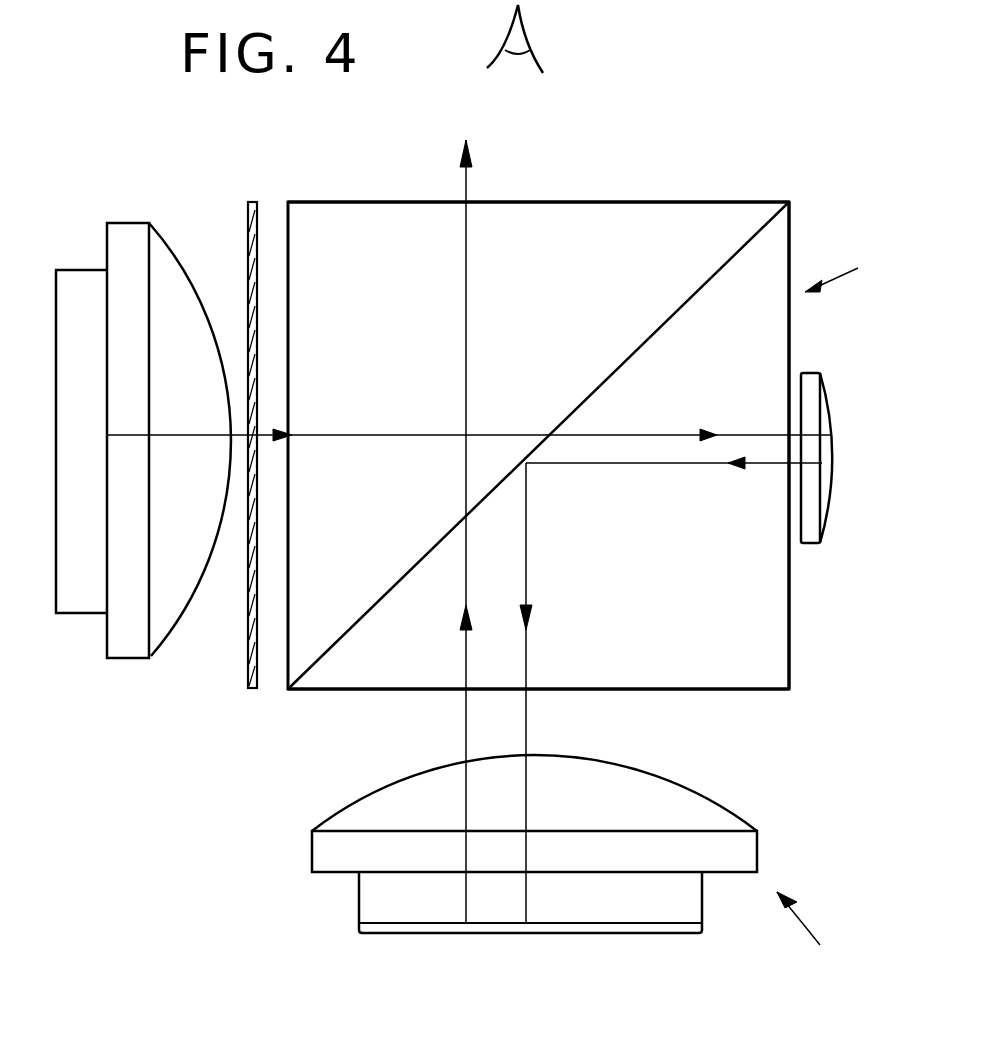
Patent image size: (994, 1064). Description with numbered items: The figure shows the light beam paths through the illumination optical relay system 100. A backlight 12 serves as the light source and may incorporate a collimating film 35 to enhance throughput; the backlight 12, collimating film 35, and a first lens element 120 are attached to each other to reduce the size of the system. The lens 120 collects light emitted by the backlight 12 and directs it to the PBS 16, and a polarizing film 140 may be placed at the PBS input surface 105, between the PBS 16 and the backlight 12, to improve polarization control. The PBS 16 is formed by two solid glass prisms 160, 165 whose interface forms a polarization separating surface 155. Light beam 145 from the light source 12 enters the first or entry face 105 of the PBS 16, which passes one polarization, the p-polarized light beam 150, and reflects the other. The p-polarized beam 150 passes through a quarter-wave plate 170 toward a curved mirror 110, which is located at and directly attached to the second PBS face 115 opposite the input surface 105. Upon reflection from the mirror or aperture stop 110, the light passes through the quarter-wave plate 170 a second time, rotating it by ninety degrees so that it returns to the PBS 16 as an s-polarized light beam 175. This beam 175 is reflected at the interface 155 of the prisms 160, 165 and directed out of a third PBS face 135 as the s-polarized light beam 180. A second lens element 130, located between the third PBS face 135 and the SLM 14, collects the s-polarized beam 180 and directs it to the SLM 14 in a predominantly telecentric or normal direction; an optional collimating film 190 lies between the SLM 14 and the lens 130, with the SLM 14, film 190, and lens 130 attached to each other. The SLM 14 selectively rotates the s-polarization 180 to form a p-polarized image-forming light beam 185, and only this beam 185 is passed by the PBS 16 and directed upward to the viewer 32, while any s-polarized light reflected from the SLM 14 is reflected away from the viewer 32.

The viewer 32 is at (528, 40).
The backlight 12 is at (78, 605).
The collimating film 35 is at (130, 650).
The first lens element 120 is at (177, 628).
The polarizing film 140 is at (253, 693).
The first PBS surface 105 is at (287, 222).
The polarization separating surface 155 is at (727, 258).
The solid glass prism 160 is at (622, 212).
The solid glass prism 165 is at (775, 265).
The PBS 16 is at (848, 274).
The second PBS face 115 is at (790, 333).
The third PBS face 135 is at (707, 692).
The light beam 145 is at (267, 428).
The p-polarized light beam 150 is at (663, 432).
The s-polarized light beam 175 is at (618, 465).
The quarter-wave plate 170 is at (815, 535).
The reflective device 110 is at (832, 418).
The p-polarized image-forming light beam 185 is at (463, 718).
The s-polarized light beam 180 is at (529, 670).
The second lens element 130 is at (728, 805).
The collimating film 190 is at (760, 853).
The SLM 14 is at (657, 935).
The illumination optical relay system 100 is at (820, 933).